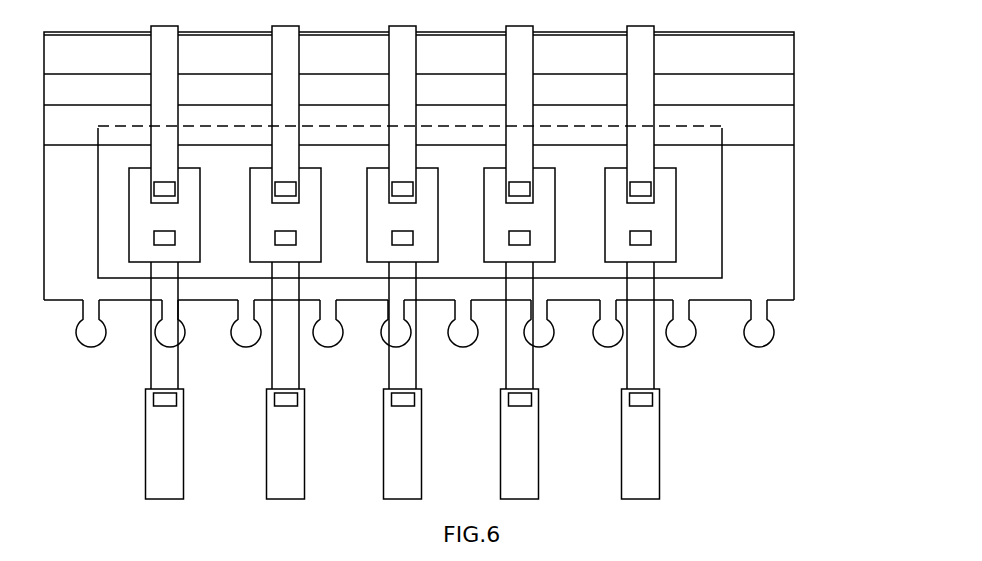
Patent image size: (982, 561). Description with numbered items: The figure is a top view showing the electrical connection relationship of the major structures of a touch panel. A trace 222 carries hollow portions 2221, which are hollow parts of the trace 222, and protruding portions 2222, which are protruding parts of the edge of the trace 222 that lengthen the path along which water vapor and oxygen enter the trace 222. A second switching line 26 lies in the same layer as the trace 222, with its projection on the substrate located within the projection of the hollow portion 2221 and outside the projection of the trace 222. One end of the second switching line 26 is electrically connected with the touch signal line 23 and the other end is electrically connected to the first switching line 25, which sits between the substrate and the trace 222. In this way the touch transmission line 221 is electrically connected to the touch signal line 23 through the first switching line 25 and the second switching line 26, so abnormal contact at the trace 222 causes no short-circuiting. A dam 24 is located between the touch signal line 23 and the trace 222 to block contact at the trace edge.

The dam 24 is at (743, 59).
The touch signal line 23 is at (645, 88).
The trace 222 is at (770, 166).
The hollow portion 2221 is at (712, 197).
The second switching line 26 is at (663, 223).
The first switching line 25 is at (642, 270).
The protruding portion 2222 is at (755, 329).
The touch transmission line 221 is at (643, 446).